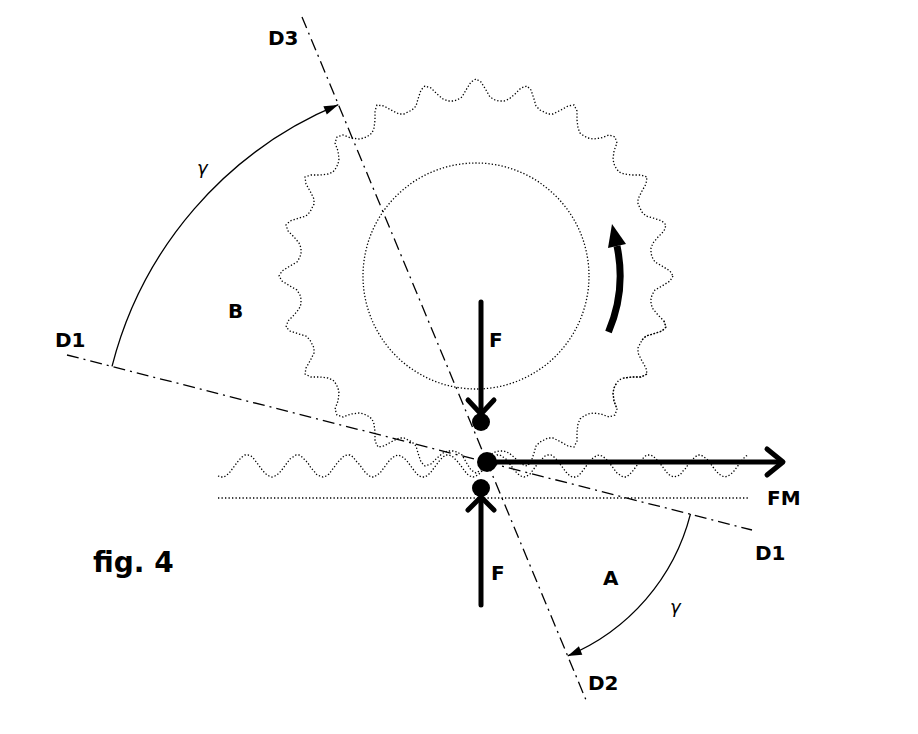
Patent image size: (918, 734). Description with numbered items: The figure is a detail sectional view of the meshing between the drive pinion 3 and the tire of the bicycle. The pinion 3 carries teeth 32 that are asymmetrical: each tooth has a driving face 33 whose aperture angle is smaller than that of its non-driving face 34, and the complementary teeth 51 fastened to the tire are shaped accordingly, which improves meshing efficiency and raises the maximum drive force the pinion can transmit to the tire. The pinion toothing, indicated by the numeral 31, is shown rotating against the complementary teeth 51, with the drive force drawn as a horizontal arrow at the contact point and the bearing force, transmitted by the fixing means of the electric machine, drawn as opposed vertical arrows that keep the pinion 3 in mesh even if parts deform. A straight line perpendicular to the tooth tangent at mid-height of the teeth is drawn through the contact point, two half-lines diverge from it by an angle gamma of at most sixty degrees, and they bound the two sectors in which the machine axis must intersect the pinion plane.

The drive pinion 3 is at (535, 275).
The toothing of the gear wheel 31 is at (713, 230).
The teeth of the pinion 32 is at (646, 372).
The driving faces 33 is at (621, 402).
The non-driving faces 34 is at (658, 338).
The complementary teeth 51 is at (370, 500).